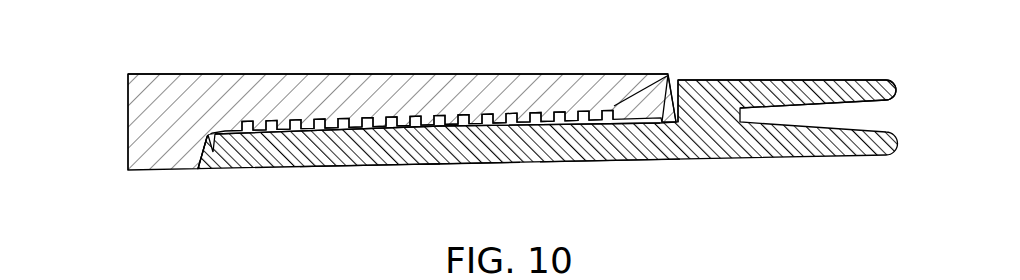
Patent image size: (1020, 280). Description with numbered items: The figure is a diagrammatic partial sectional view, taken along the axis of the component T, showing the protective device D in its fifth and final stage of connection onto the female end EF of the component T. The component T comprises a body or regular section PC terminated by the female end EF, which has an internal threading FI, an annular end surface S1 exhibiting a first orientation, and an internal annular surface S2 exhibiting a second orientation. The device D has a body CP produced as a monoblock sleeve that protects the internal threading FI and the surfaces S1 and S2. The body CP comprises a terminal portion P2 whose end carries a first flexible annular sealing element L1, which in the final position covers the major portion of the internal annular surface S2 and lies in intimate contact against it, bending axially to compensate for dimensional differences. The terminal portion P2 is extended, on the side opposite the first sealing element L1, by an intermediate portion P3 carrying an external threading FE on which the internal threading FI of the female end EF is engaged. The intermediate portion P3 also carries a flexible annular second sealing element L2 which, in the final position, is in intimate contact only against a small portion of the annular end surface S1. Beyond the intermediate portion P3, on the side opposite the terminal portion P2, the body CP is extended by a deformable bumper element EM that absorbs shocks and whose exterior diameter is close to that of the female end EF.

The body or regular section PC is at (167, 72).
The female end EF is at (255, 73).
The component T is at (127, 128).
The internal annular surface S2 is at (200, 160).
The first sealing element L1 is at (216, 152).
The internal threading FI is at (311, 128).
The terminal portion P2 is at (377, 166).
The body CP is at (462, 163).
The intermediate portion P3 is at (593, 162).
The external threading FE is at (467, 112).
The annular end surface S1 is at (664, 78).
The second sealing element L2 is at (673, 77).
The bumper element EM is at (783, 79).
The device D is at (748, 165).